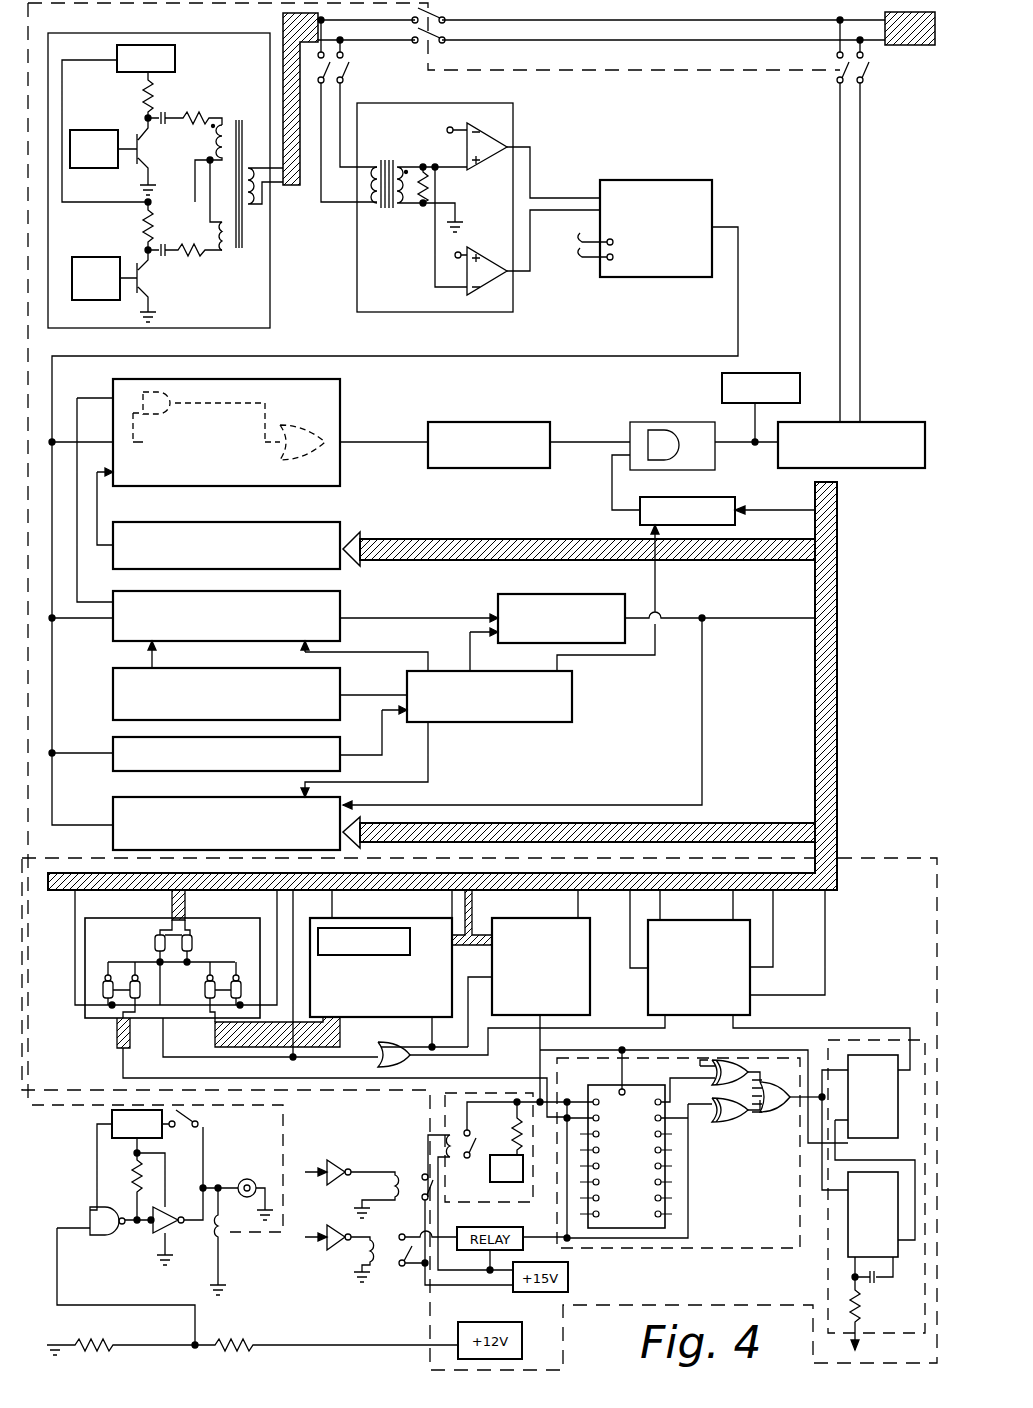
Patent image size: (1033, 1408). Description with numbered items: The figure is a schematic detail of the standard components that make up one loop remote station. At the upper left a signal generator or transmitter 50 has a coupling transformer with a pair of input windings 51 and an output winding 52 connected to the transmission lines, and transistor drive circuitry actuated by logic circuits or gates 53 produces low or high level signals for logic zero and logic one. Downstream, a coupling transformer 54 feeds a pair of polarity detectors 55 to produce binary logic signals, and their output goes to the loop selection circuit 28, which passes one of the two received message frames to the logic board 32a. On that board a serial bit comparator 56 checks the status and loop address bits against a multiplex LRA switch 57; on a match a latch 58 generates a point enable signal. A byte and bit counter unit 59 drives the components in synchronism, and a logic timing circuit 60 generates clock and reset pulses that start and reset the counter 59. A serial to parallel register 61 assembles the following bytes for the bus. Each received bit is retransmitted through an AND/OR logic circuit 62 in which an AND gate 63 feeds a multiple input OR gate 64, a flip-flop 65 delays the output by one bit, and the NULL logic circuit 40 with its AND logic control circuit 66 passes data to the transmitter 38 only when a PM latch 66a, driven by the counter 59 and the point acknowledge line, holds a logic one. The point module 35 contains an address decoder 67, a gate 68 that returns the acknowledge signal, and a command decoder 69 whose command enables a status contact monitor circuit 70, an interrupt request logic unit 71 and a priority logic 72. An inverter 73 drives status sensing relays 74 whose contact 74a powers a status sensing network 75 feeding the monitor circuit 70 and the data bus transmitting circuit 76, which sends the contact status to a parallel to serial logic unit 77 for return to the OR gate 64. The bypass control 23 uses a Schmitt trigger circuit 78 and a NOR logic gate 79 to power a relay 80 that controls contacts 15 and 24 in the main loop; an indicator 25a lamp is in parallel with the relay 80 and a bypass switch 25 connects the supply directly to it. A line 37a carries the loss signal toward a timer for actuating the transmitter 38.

The contacts 15 is at (464, 14).
The bypass control 23 is at (245, 1229).
The contacts 24 is at (358, 60).
The bypass switch 25 is at (208, 1119).
The indicator 25a is at (245, 1179).
The loop selection circuit 28 is at (685, 180).
The logic board 32a is at (586, 766).
The point module 35 is at (893, 858).
The line 37a is at (722, 388).
The transmitter 38 is at (868, 468).
The NULL logic circuit 40 is at (684, 434).
The signal generator or transmitter 50 is at (181, 180).
The input windings 51 is at (204, 152).
The output winding 52 is at (262, 204).
The logic circuits or gates 53 is at (85, 168).
The coupling transformer 54 is at (405, 158).
The polarity detectors 55 is at (485, 247).
The serial bit comparator 56 is at (340, 600).
The multiplex LRA switch 57 is at (340, 676).
The latch 58 is at (555, 594).
The byte and bit counter unit 59 is at (572, 700).
The logic timing circuit 60 is at (113, 740).
The serial to parallel register 61 is at (113, 808).
The AND/OR logic circuit 62 is at (222, 482).
The AND gate 63 is at (168, 392).
The OR gate 64 is at (330, 418).
The flip-flop 65 is at (465, 424).
The AND logic control circuit 66 is at (648, 436).
The PM latch 66a is at (735, 497).
The address decoder 67 is at (423, 925).
The gate 68 is at (385, 1045).
The command decoder 69 is at (553, 1001).
The status contact monitor circuit 70 is at (749, 1196).
The interrupt request logic unit 71 is at (902, 1321).
The priority logic 72 is at (648, 1003).
The inverter 73 is at (333, 1160).
The status sensing relays 74 is at (393, 1172).
The contact 74a is at (415, 1168).
The status sensing network 75 is at (505, 1202).
The data bus transmitting circuit 76 is at (118, 947).
The parallel to serial logic unit 77 is at (340, 526).
The Schmitt trigger circuit 78 is at (90, 1214).
The NOR logic gate 79 is at (170, 1210).
The relay 80 is at (228, 1240).